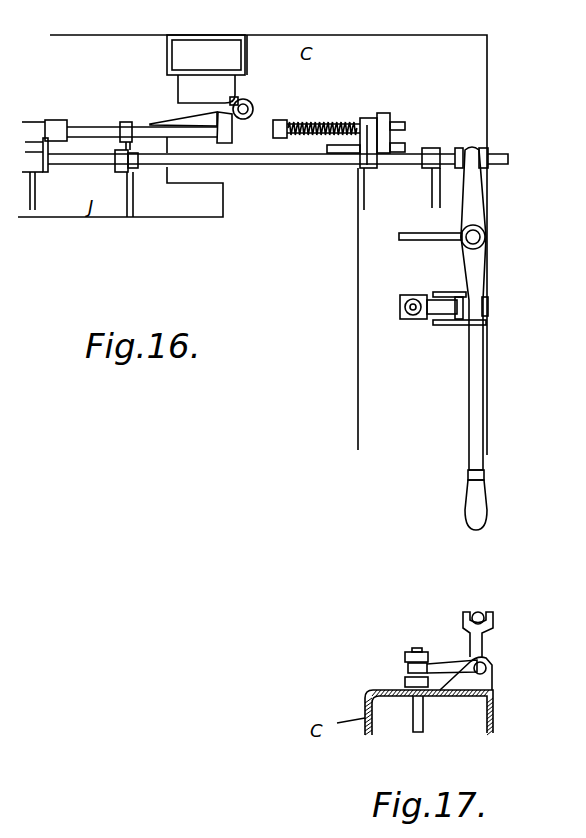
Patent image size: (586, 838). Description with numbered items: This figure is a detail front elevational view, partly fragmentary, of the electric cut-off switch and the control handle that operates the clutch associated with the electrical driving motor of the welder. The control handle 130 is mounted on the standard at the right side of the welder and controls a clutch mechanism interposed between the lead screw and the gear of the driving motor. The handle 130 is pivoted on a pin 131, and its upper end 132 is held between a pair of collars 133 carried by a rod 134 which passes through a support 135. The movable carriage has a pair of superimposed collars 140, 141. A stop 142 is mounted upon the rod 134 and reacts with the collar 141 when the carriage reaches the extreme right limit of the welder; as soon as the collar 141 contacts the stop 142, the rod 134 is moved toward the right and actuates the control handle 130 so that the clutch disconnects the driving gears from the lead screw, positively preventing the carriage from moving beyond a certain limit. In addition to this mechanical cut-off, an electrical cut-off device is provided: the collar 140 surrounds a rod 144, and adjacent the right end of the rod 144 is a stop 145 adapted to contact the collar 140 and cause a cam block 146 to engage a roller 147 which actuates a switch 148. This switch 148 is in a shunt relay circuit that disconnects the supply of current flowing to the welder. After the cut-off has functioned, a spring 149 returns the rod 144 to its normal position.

The control handle 130 is at (481, 500).
The pin 131 is at (480, 237).
The upper end 132 is at (476, 150).
The collars 133 is at (460, 148).
The rod 134 is at (287, 164).
The support 135 is at (425, 170).
The collar 140 is at (47, 118).
The collar 141 is at (38, 168).
The stop 142 is at (130, 170).
The rod 144 is at (96, 127).
The stop 145 is at (128, 120).
The cam block 146 is at (228, 137).
The roller 147 is at (253, 108).
The switch 148 is at (206, 72).
The spring 149 is at (325, 127).